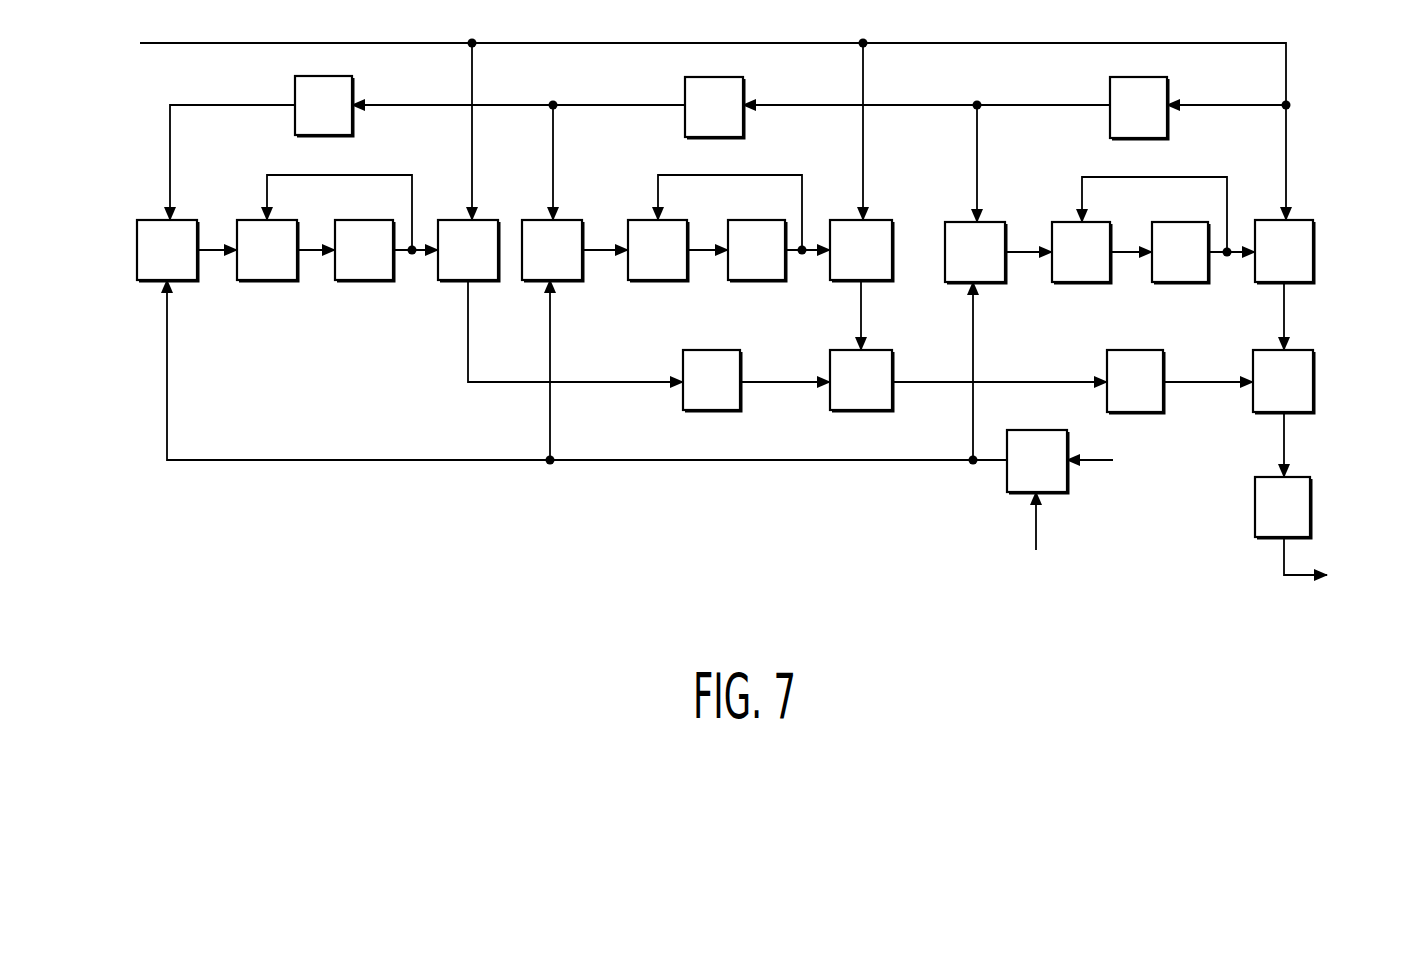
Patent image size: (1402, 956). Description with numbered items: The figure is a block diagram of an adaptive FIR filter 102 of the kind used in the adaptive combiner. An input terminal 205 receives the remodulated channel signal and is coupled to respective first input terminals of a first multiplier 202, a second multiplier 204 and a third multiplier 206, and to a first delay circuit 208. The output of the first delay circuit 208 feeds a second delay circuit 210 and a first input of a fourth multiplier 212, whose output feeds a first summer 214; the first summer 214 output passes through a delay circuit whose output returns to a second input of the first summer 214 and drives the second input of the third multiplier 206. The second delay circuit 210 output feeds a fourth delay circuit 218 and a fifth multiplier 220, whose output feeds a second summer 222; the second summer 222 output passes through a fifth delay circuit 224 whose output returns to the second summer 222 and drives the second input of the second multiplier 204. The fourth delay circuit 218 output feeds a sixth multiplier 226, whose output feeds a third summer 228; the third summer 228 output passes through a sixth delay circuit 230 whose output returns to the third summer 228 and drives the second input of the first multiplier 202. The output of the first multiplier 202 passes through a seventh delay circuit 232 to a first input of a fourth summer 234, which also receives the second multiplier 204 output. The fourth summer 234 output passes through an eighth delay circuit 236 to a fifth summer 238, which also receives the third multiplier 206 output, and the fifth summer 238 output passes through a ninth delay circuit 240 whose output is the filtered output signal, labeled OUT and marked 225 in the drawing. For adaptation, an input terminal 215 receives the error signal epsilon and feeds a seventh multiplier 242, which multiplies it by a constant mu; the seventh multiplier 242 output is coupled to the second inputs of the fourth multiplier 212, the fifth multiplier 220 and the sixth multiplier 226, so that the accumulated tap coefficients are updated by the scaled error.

The first adaptive FIR filter 102 is at (208, 508).
The first multiplier 202 is at (455, 220).
The second multiplier 204 is at (845, 220).
The input terminal 205 is at (141, 50).
The third multiplier 206 is at (1313, 238).
The first delay circuit 208 is at (1110, 92).
The second delay circuit 210 is at (685, 92).
The fourth multiplier 212 is at (950, 222).
The first summer 214 is at (1058, 222).
The input terminal 215 is at (1036, 530).
The fourth delay circuit 218 is at (295, 92).
The fifth multiplier 220 is at (530, 220).
The second summer 222 is at (637, 220).
The fifth delay circuit 224 is at (728, 270).
The output signal 225 is at (1305, 592).
The sixth multiplier 226 is at (150, 220).
The third summer 228 is at (245, 220).
The sixth delay circuit 230 is at (335, 270).
The seventh delay circuit 232 is at (683, 370).
The fourth summer 234 is at (830, 360).
The eighth delay circuit 236 is at (1107, 372).
The fifth summer 238 is at (1253, 360).
The ninth delay circuit 240 is at (1313, 497).
The seventh multiplier 242 is at (1007, 478).